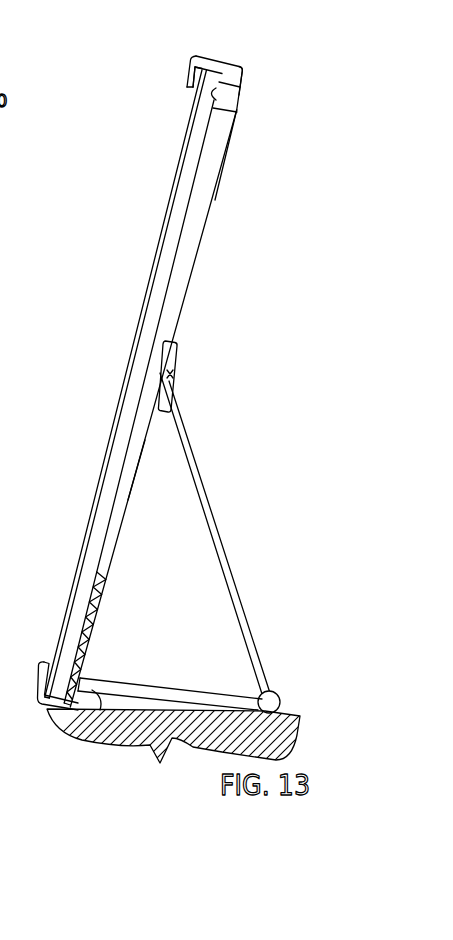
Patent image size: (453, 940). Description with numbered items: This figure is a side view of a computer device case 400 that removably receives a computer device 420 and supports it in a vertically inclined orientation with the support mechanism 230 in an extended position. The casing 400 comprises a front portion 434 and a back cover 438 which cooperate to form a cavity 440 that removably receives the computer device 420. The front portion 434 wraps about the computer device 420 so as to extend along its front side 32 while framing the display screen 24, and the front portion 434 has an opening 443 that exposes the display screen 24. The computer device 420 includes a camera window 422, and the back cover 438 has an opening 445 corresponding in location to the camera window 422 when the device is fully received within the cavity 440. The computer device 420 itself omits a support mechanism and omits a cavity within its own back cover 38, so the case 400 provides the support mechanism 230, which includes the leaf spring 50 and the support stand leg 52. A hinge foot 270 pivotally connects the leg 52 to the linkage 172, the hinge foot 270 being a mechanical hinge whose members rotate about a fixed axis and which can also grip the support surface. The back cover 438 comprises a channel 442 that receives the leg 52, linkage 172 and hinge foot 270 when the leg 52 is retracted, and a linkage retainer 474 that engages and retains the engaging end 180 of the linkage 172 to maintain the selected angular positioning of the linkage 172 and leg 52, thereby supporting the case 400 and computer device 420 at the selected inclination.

The cavity 440 is at (210, 57).
The front portion 434 is at (188, 82).
The computer device case 400 is at (242, 68).
The opening 443 is at (188, 98).
The back cover 438 is at (244, 80).
The camera window 422 is at (212, 94).
The opening 445 is at (232, 113).
The front side 32 is at (146, 388).
The display screen 24 is at (146, 293).
The back cover 38 is at (182, 228).
The leaf spring 50 is at (171, 373).
The support mechanism 230 is at (250, 543).
The channel 442 is at (137, 470).
The linkage retainer 474 is at (104, 600).
The support stand leg 52 is at (240, 619).
The computer device 420 is at (50, 662).
The hinge foot 270 is at (282, 708).
The engaging end 180 is at (85, 737).
The linkage 172 is at (177, 693).